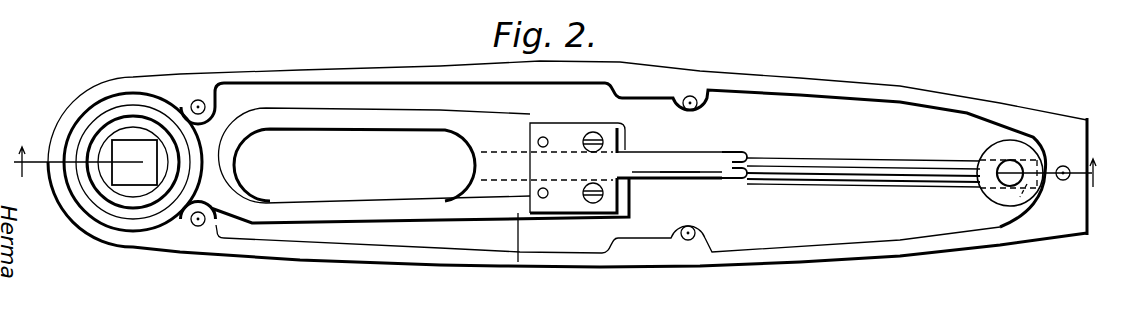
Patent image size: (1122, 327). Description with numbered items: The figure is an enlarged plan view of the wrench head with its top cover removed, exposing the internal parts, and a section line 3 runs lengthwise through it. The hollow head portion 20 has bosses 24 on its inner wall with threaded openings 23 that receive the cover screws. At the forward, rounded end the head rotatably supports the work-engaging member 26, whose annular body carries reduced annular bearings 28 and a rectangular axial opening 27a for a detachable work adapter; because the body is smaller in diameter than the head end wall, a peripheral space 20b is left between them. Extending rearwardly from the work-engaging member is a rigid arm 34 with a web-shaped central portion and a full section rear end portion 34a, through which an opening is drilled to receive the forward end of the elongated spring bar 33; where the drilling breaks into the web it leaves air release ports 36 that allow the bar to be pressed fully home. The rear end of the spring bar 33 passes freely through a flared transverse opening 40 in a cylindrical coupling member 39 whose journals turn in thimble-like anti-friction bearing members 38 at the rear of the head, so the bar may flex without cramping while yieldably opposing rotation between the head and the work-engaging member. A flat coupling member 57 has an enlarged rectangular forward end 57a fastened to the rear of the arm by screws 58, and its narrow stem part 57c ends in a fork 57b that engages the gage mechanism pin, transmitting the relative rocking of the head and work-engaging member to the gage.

The section line 3- 3 is at (555, 164).
The hollow head portion 20 is at (393, 70).
The peripheral space 20b is at (77, 133).
The threaded openings 23 is at (197, 99).
The bosses 24 is at (209, 216).
The work-engaging member 26 is at (115, 131).
The axial opening 27a is at (113, 183).
The annular bearings 28 is at (130, 107).
The spring bar 33 is at (860, 157).
The rigid arm 34 is at (410, 213).
The full section rear end portion 34a is at (534, 259).
The air release ports 36 is at (473, 166).
The anti-friction bearing members 38 is at (1007, 165).
The cylindrical coupling member 39 is at (988, 195).
The transverse opening 40 is at (1016, 200).
The coupling member 57 is at (626, 156).
The forward end of coupling member 57a is at (560, 128).
The fork 57b is at (745, 182).
The stem part 57c is at (690, 172).
The screws 58 is at (590, 186).